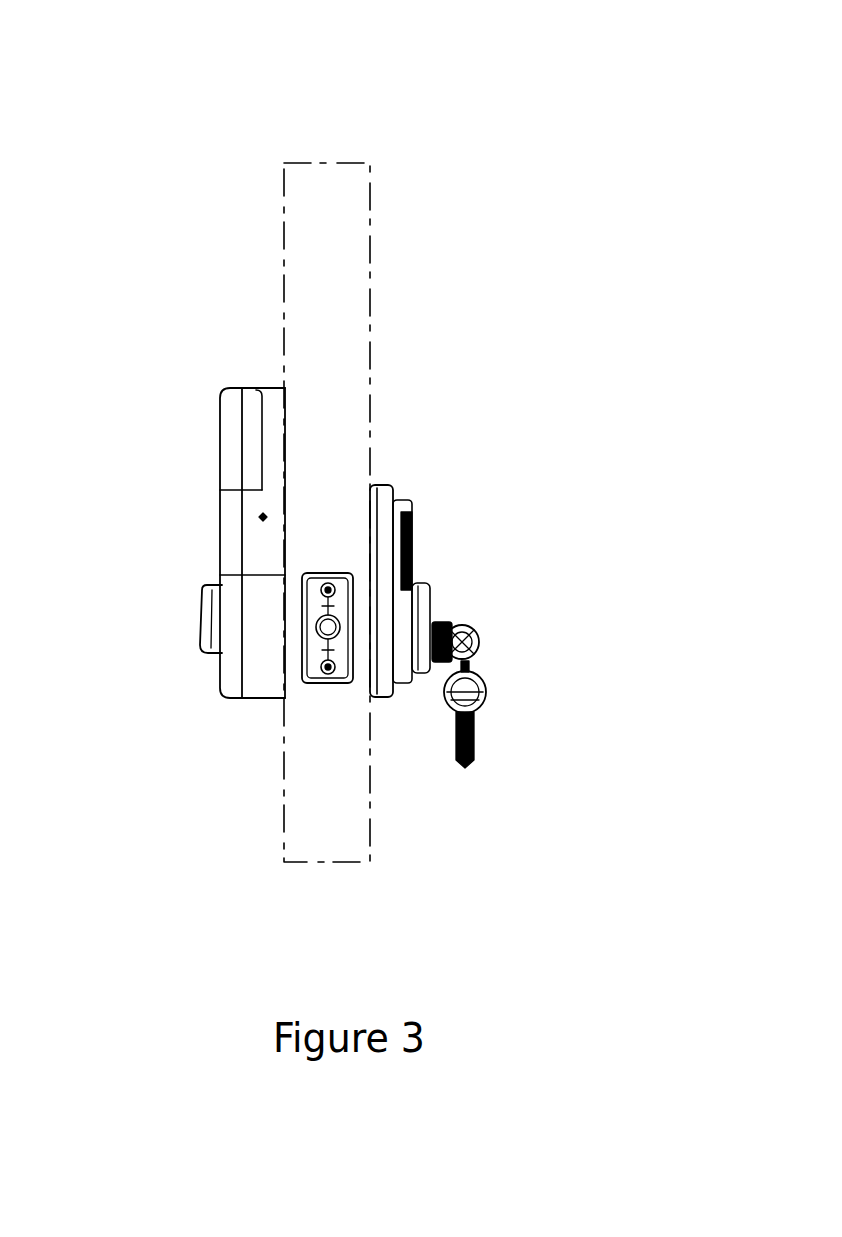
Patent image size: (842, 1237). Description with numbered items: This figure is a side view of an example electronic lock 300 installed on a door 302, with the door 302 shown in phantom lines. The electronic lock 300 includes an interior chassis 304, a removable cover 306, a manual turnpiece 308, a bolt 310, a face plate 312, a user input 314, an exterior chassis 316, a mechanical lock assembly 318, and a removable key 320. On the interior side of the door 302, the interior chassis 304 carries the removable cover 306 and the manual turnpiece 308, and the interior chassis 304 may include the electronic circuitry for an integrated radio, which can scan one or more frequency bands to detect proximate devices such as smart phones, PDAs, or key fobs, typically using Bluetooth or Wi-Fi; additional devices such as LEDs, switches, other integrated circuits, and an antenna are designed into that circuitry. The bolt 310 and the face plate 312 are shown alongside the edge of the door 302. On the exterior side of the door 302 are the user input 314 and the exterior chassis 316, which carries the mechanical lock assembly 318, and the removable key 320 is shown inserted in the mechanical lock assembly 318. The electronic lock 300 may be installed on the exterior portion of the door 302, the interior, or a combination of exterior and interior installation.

The electronic lock 300 is at (518, 37).
The door 302 is at (320, 160).
The interior chassis 304 is at (182, 418).
The removable cover 306 is at (220, 437).
The manual turnpiece 308 is at (197, 620).
The bolt 310 is at (303, 647).
The face plate 312 is at (323, 687).
The user input 314 is at (433, 541).
The exterior chassis 316 is at (495, 508).
The mechanical lock assembly 318 is at (470, 603).
The removable key 320 is at (475, 630).